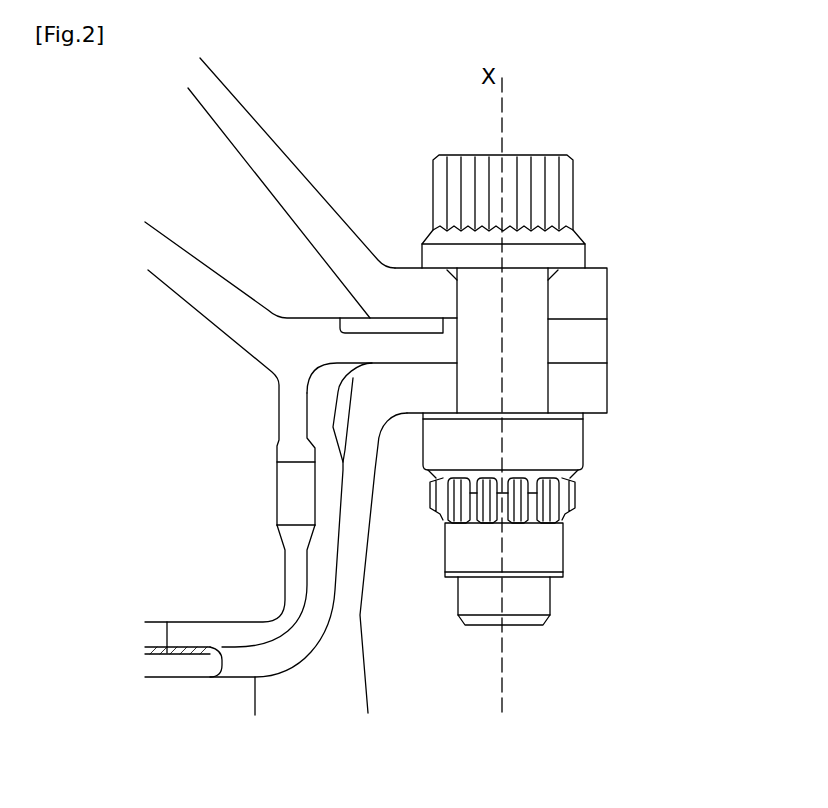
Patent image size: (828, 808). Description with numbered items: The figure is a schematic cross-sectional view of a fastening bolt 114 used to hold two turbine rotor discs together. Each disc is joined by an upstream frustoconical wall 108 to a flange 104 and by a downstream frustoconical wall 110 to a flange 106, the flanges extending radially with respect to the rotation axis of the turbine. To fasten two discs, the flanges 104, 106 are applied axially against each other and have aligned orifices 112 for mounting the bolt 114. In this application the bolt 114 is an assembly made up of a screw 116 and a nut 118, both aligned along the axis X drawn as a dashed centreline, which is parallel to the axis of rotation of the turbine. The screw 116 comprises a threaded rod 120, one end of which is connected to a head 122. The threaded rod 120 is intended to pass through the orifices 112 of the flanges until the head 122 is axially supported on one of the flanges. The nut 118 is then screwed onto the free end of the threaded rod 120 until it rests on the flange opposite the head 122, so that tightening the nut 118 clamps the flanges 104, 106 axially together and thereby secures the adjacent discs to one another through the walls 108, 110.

The flange 104 is at (608, 278).
The flange 106 is at (608, 380).
The upstream frustoconical wall 108 is at (247, 128).
The downstream frustoconical wall 110 is at (347, 613).
The orifices 112 is at (542, 418).
The bolt 114 is at (557, 99).
The screw 116 is at (550, 393).
The nut 118 is at (565, 543).
The threaded rod 120 is at (512, 588).
The head 122 is at (473, 152).